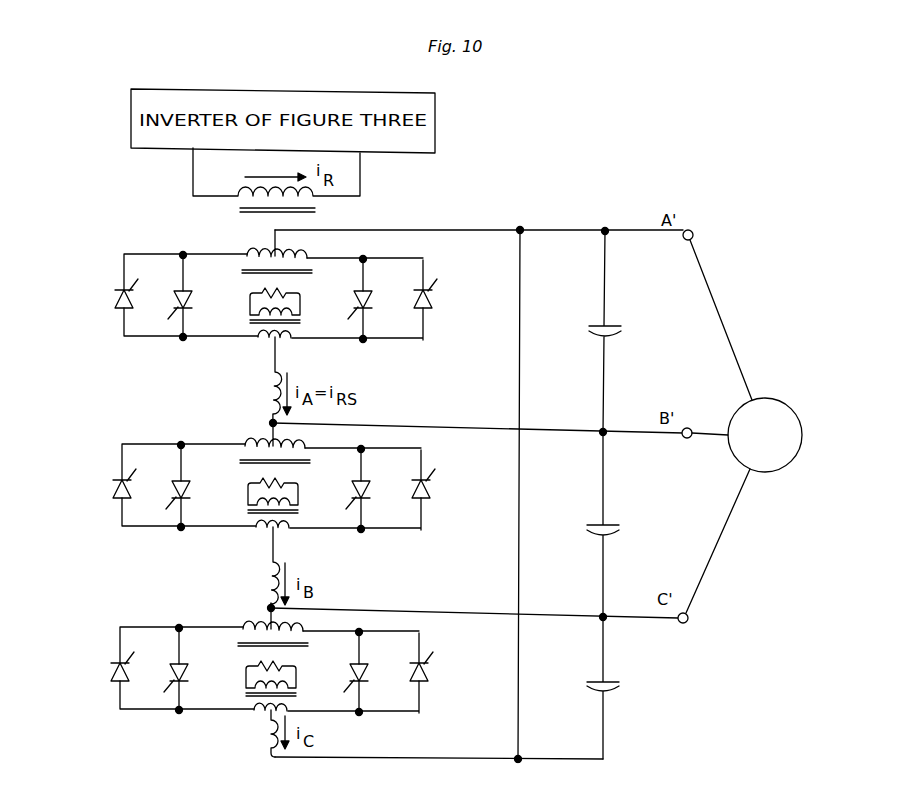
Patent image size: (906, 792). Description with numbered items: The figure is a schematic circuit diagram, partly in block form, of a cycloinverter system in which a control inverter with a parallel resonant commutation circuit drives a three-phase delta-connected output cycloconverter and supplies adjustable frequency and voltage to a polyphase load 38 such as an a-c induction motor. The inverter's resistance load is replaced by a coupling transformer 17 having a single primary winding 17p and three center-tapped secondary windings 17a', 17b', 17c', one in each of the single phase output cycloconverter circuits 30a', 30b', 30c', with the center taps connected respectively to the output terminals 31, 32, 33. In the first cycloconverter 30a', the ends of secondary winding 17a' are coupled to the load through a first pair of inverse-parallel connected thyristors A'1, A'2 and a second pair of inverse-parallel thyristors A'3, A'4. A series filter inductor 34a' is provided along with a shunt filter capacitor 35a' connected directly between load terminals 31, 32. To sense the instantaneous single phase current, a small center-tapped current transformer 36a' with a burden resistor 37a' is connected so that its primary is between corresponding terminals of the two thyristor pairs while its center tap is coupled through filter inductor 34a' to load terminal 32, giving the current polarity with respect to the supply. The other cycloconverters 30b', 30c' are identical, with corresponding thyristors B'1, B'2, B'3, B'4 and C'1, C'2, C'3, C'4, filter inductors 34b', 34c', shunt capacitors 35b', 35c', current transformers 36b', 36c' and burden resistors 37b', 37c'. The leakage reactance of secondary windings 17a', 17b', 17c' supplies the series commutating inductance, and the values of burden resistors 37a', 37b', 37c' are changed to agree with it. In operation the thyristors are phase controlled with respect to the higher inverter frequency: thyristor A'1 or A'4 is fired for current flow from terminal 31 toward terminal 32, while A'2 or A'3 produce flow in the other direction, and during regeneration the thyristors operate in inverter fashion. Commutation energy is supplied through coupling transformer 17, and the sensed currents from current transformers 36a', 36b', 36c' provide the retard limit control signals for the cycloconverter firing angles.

The coupling transformer 17 is at (320, 218).
The primary winding 17p is at (236, 211).
The center-tapped secondary winding 17a' is at (264, 251).
The center-tapped secondary winding 17b' is at (262, 441).
The center-tapped secondary winding 17c' is at (260, 624).
The single phase output cycloconverter circuit 30a' is at (245, 297).
The single phase output cycloconverter circuit 30b' is at (243, 487).
The single phase output cycloconverter circuit 30c' is at (241, 670).
The burden resistor 37a' is at (247, 296).
The burden resistor 37b' is at (245, 486).
The burden resistor 37c' is at (243, 669).
The center-tapped current transformer 36a' is at (245, 346).
The center-tapped current transformer 36b' is at (243, 536).
The center-tapped current transformer 36c' is at (241, 719).
The series filter inductor 34a' is at (241, 380).
The series filter inductor 34b' is at (239, 567).
The series filter inductor 34c' is at (236, 733).
The shunt filter capacitor 35a' is at (617, 331).
The shunt filter capacitor 35b' is at (615, 524).
The shunt filter capacitor 35c' is at (615, 688).
The output terminal 31 is at (696, 231).
The output terminal 32 is at (691, 429).
The output terminal 33 is at (687, 622).
The load 38 is at (788, 406).
The thyristor A'1 is at (112, 293).
The thyristor A'2 is at (195, 305).
The thyristor A'3 is at (373, 304).
The thyristor A'4 is at (439, 295).
The thyristor B'1 is at (110, 483).
The thyristor B'2 is at (193, 495).
The thyristor B'3 is at (371, 494).
The thyristor B'4 is at (437, 485).
The thyristor C'1 is at (108, 666).
The thyristor C'2 is at (191, 678).
The thyristor C'3 is at (369, 677).
The thyristor C'4 is at (435, 668).